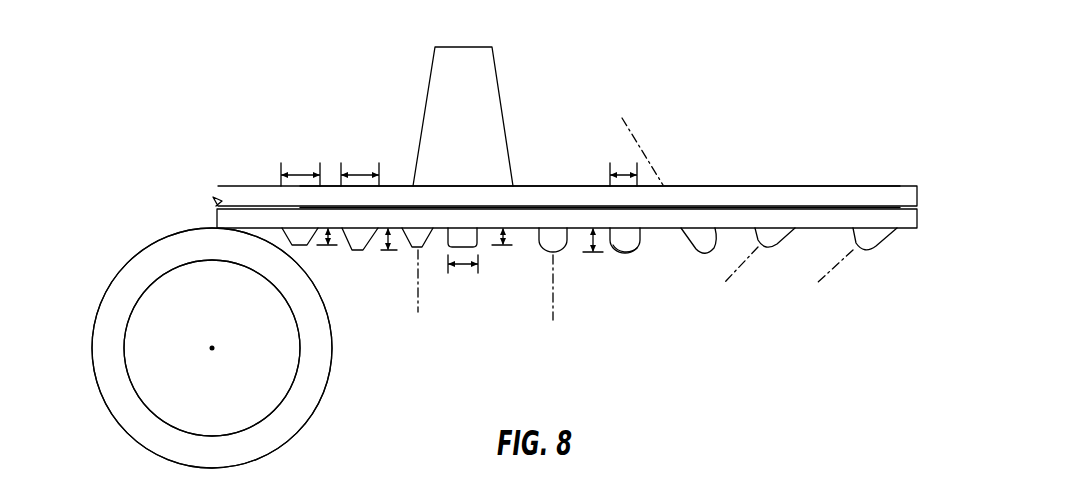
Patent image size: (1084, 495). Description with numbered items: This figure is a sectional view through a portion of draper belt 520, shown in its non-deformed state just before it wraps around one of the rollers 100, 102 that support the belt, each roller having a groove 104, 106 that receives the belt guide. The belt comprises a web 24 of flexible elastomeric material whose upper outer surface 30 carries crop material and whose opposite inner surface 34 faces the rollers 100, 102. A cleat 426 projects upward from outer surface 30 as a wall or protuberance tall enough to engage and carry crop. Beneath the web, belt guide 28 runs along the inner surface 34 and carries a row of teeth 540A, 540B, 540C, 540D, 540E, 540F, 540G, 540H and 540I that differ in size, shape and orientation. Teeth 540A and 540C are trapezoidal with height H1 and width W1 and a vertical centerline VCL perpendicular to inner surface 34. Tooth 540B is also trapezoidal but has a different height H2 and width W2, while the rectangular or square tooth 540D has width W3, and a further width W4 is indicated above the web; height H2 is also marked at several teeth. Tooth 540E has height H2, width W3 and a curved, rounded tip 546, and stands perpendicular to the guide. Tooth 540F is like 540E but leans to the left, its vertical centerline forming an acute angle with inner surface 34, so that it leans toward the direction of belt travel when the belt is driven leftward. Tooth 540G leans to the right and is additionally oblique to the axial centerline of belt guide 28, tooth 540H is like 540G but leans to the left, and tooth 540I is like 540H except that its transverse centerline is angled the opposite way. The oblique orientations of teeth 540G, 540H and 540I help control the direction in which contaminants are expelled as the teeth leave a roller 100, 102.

The draper belt 520 is at (197, 113).
The web 24 is at (917, 189).
The belt guide 28 is at (917, 219).
The upper outer surface 30 is at (708, 187).
The inner surface 34 is at (748, 205).
The cleat 426 is at (505, 102).
The roller 100 is at (100, 303).
The roller 102 is at (212, 348).
The groove 104 is at (290, 390).
The groove 106 is at (212, 348).
The tooth 540A is at (310, 247).
The tooth 540B is at (360, 252).
The tooth 540C is at (423, 250).
The tooth 540D is at (477, 250).
The tooth 540E is at (563, 253).
The tooth 540F is at (632, 254).
The tooth 540G is at (702, 254).
The tooth 540H is at (770, 248).
The tooth 540I is at (882, 249).
The rounded tip 546 is at (620, 254).
The height H1 is at (327, 239).
The height H2 is at (401, 228).
The width W1 is at (300, 165).
The width W2 is at (360, 165).
The width W3 is at (463, 268).
The width dimension W4 is at (623, 162).
The vertical centerline VCL is at (628, 127).